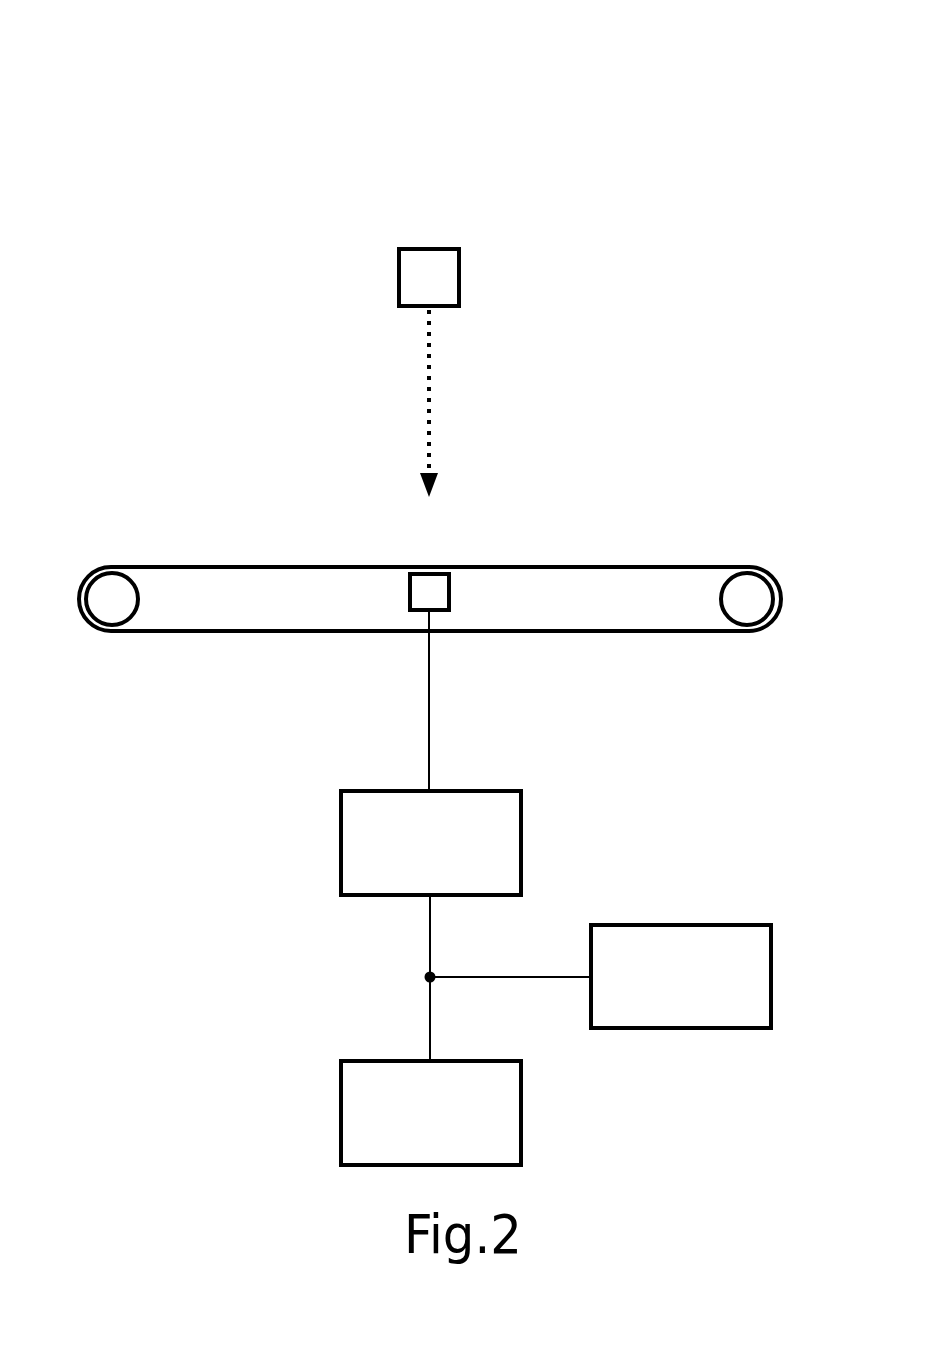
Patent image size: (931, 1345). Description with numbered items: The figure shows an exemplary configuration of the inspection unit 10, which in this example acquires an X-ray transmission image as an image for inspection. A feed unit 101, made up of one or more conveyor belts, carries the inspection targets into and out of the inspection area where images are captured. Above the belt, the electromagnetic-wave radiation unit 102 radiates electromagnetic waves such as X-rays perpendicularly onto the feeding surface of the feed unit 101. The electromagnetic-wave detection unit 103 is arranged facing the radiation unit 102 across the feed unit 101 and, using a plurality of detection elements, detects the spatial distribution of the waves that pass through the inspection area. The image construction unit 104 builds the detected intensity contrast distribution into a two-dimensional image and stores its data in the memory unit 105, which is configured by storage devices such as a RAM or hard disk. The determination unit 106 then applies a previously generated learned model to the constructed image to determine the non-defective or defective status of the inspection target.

The inspection unit 10 is at (414, 98).
The feed unit 101 is at (690, 563).
The electromagnetic-wave radiation unit 102 is at (460, 247).
The electromagnetic-wave detection unit 103 is at (451, 582).
The image construction unit 104 is at (464, 788).
The memory unit 105 is at (726, 922).
The determination unit 106 is at (468, 1058).